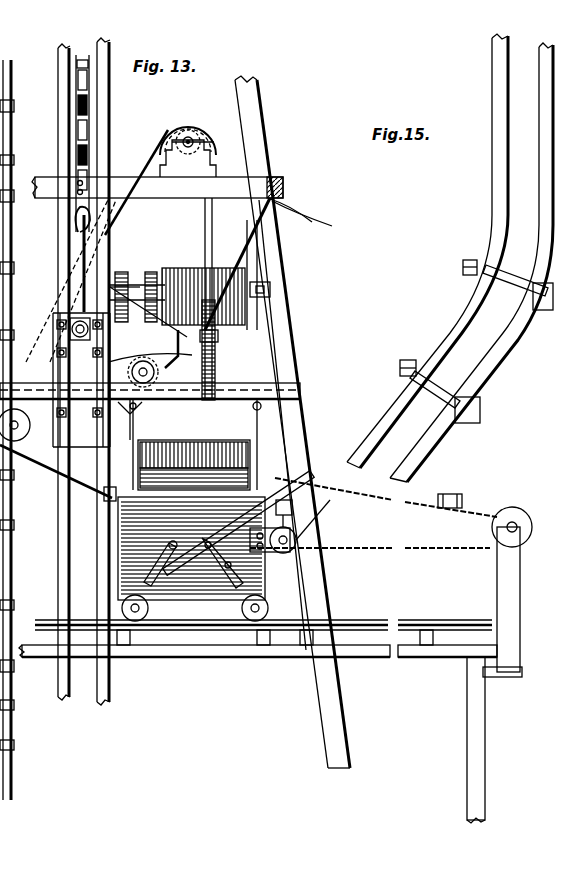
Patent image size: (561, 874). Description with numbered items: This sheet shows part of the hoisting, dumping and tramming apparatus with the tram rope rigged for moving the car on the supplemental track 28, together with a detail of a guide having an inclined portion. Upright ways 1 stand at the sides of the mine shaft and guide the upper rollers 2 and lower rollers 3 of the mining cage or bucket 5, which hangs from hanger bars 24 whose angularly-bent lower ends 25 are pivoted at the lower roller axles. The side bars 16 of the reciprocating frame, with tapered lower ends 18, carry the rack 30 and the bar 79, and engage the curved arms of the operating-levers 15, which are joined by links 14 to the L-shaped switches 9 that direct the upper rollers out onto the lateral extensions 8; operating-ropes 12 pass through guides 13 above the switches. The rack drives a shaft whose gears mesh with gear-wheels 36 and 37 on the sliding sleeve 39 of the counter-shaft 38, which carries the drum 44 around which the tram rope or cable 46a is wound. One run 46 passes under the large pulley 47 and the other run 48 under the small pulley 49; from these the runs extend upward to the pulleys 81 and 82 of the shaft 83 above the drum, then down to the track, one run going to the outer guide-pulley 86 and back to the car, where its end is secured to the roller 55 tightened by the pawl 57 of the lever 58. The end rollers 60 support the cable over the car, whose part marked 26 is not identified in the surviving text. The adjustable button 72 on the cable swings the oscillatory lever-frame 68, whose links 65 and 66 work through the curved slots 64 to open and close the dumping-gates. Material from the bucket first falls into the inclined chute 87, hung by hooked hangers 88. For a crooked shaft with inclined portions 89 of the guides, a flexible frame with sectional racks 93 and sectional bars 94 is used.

In FIG. 13, the upright ways 1 is at (56, 282).
In FIG. 15, the upright ways 1 is at (491, 196).
In FIG. 13, the upper rollers or wheels 2 is at (171, 349).
In FIG. 13, the lower rollers or wheels 3 is at (90, 368).
In FIG. 13, the mining cage or bucket 5 is at (120, 367).
In FIG. 13, the lateral extensions 8 is at (138, 405).
In FIG. 13, the L-shaped switches 9 is at (150, 345).
In FIG. 13, the operating-ropes 12 is at (237, 264).
In FIG. 13, the guides 13 is at (292, 422).
In FIG. 13, the links 14 is at (149, 361).
In FIG. 13, the operating-levers 15 is at (150, 408).
In FIG. 13, the side bars 16 is at (82, 168).
In FIG. 13, the lower ends of side bars 18 is at (74, 222).
In FIG. 13, the hanger bars or rods 24 is at (78, 250).
In FIG. 13, the angularly-bent lower ends 25 is at (58, 300).
In FIG. 13, the carriage 26 is at (191, 548).
In FIG. 13, the supplemental track 28 is at (193, 633).
In FIG. 13, the rack-bar 30 is at (87, 80).
In FIG. 13, the gear-wheel 36 is at (118, 287).
In FIG. 13, the gear-wheel 37 is at (152, 285).
In FIG. 13, the counter-shaft 38 is at (272, 290).
In FIG. 13, the sliding sleeve 39 is at (137, 284).
In FIG. 13, the drum 44 is at (182, 268).
In FIG. 13, the flight or run of tram rope 46 is at (35, 470).
In FIG. 13, the tram rope or cable 46a is at (239, 275).
In FIG. 13, the large pulley 47 is at (216, 348).
In FIG. 13, the run of tram rope 48 is at (205, 199).
In FIG. 13, the small pulley 49 is at (218, 362).
In FIG. 13, the roller or shaft 55 is at (283, 554).
In FIG. 13, the pawl 57 is at (300, 532).
In FIG. 13, the lever 58 is at (312, 500).
In FIG. 13, the end rollers or pulleys 60 is at (208, 505).
In FIG. 13, the curved slots 64 is at (222, 606).
In FIG. 13, the link 65 is at (224, 563).
In FIG. 13, the link 66 is at (180, 565).
In FIG. 13, the oscillatory lever-frame 68 is at (238, 523).
In FIG. 13, the adjustable button or projection 72 is at (448, 509).
In FIG. 13, the bar 79 is at (77, 101).
In FIG. 13, the pulley 81 is at (190, 130).
In FIG. 13, the pulley 82 is at (175, 118).
In FIG. 13, the shaft 83 is at (188, 158).
In FIG. 13, the outer guide-pulley 86 is at (515, 508).
In FIG. 13, the inclined chute 87 is at (194, 455).
In FIG. 13, the hangers or rods 88 is at (135, 432).
In FIG. 15, the inclined portions 89 is at (476, 341).
In FIG. 13, the racks 93 is at (12, 150).
In FIG. 13, the bars 94 is at (12, 706).